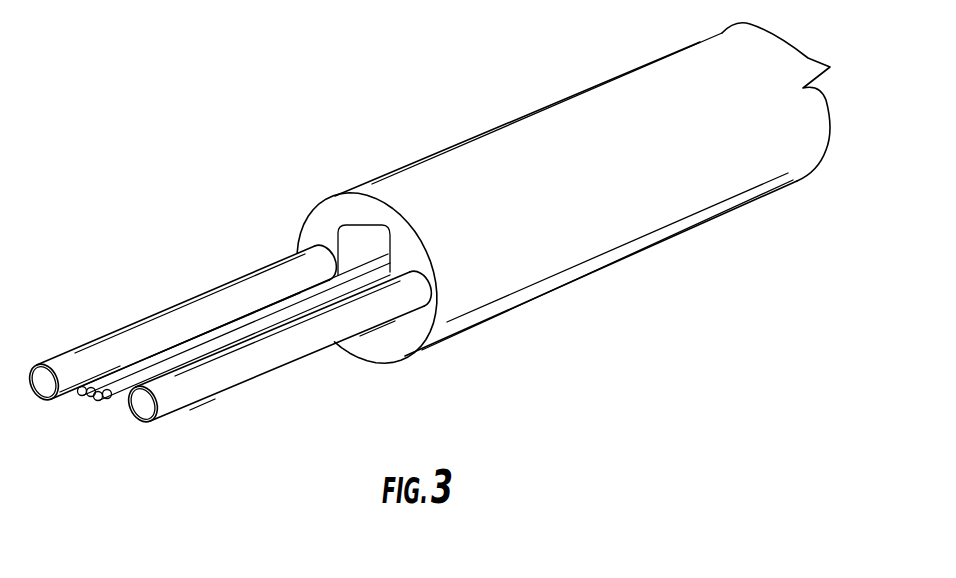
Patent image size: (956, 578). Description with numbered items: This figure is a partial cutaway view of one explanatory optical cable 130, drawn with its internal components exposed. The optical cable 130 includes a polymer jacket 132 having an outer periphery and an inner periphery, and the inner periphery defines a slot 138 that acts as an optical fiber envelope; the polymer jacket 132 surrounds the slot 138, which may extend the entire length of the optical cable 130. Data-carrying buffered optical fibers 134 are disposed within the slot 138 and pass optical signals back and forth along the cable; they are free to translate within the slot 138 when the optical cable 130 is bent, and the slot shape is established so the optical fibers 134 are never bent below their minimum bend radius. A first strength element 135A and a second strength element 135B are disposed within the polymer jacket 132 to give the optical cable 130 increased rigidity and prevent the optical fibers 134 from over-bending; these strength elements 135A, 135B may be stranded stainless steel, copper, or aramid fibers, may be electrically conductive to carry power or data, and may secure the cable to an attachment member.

The optical cable 130 is at (287, 108).
The polymer jacket 132 is at (315, 232).
The optical fibers 134 is at (107, 415).
The first strength element 135A is at (135, 325).
The second strength element 135B is at (235, 358).
The slot 138 is at (362, 238).